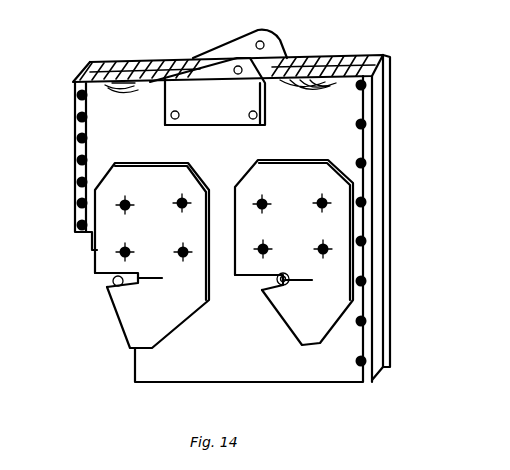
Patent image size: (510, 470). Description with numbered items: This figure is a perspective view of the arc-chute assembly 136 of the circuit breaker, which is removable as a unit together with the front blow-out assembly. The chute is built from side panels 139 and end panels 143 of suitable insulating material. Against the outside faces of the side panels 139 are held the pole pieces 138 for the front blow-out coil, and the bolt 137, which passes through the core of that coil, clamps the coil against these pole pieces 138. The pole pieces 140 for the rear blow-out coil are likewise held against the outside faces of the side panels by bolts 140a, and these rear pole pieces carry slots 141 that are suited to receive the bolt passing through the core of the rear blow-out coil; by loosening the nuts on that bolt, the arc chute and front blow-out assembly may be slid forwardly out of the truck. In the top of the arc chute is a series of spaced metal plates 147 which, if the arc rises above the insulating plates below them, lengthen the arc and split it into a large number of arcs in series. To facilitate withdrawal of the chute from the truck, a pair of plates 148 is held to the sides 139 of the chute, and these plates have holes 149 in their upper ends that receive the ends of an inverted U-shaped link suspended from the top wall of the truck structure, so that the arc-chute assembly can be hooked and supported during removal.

The arc-chute assembly 136 is at (293, 405).
The bolt 137 is at (288, 286).
The pole pieces 138 is at (290, 162).
The side panels 139 is at (392, 326).
The pole pieces 140 is at (145, 164).
The bolts 140a is at (160, 233).
The slots 141 is at (110, 284).
The end panels 143 is at (78, 72).
The metal plates 147 is at (122, 92).
The plates 148 is at (285, 50).
The holes 149 is at (222, 44).